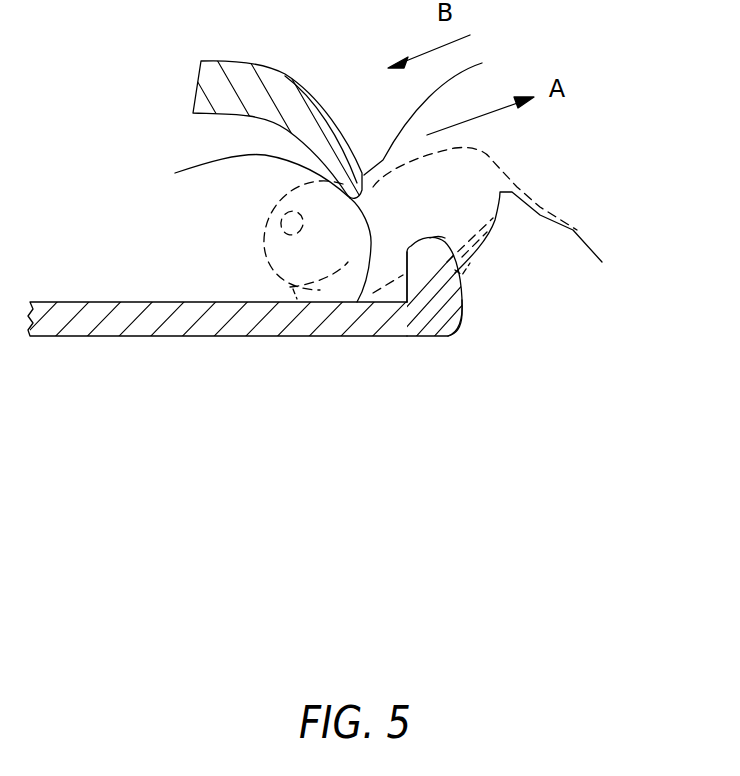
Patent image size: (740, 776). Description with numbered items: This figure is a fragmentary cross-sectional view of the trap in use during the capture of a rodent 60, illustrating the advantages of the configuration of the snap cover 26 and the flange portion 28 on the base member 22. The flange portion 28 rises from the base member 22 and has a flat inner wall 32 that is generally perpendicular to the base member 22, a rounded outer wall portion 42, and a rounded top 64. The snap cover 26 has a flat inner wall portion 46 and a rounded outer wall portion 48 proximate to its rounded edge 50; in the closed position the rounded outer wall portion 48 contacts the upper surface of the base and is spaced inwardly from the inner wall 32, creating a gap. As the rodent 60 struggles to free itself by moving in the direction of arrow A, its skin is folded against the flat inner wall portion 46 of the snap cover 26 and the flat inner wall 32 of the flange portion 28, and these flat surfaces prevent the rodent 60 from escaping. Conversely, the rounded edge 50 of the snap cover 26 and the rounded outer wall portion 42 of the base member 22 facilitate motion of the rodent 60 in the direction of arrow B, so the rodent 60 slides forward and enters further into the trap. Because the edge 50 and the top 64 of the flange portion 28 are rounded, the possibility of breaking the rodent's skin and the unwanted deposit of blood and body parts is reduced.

The base member 22 is at (170, 338).
The snap cover 26 is at (268, 63).
The flange portion 28 is at (443, 320).
The inner wall 32 is at (411, 288).
The outer wall portion 42 is at (460, 287).
The inner wall portion 46 is at (245, 226).
The outer wall portion 48 is at (441, 109).
The edge 50 is at (357, 302).
The rodent 60 is at (460, 186).
The top 64 is at (445, 237).